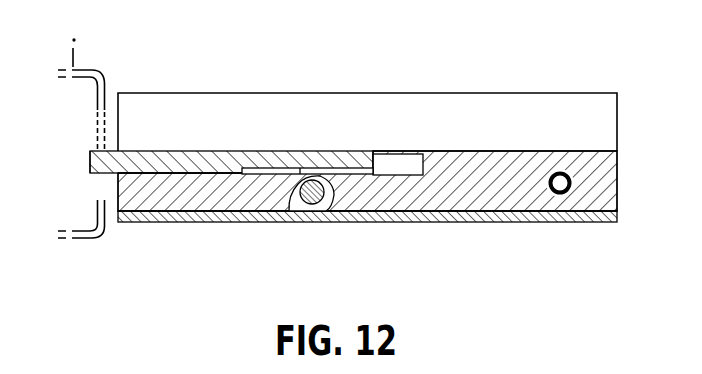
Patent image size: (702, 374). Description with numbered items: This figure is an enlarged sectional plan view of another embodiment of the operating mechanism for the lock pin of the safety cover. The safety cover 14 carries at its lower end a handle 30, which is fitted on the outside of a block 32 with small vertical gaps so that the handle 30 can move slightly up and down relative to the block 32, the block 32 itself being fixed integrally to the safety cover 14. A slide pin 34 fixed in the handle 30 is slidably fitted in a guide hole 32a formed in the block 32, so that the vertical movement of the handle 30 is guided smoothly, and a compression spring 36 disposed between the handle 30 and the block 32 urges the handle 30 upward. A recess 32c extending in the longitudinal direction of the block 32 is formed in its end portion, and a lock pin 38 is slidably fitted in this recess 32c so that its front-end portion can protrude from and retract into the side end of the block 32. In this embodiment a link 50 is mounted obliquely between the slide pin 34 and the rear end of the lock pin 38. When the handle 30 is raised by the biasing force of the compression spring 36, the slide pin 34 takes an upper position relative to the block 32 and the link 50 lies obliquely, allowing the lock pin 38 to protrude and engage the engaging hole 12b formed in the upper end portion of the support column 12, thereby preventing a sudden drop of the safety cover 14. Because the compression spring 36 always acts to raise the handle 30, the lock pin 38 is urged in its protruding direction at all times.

The support column 12 is at (81, 123).
The engaging hole 12b is at (88, 162).
The safety cover 14 is at (452, 93).
The handle 30 is at (467, 223).
The block 32 is at (590, 190).
The guide hole 32a is at (326, 212).
The recess 32c is at (222, 150).
The slide pin 34 is at (284, 212).
The compression spring 36 is at (548, 190).
The lock pin 38 is at (160, 168).
The link 50 is at (345, 168).